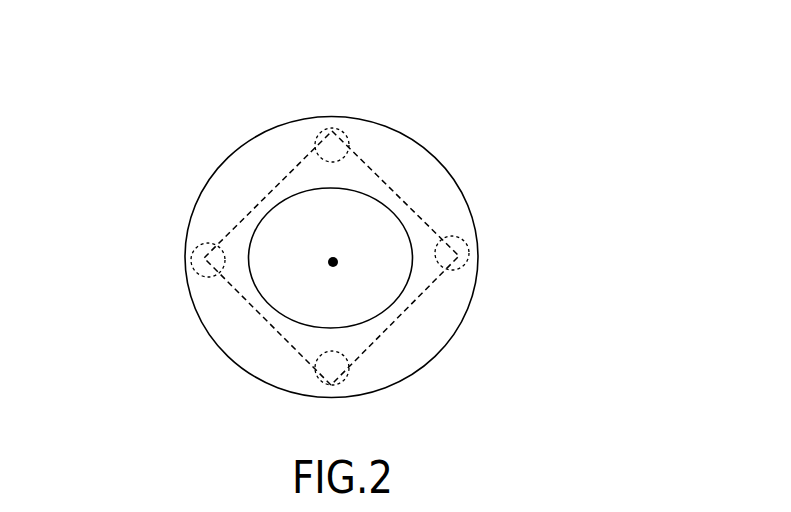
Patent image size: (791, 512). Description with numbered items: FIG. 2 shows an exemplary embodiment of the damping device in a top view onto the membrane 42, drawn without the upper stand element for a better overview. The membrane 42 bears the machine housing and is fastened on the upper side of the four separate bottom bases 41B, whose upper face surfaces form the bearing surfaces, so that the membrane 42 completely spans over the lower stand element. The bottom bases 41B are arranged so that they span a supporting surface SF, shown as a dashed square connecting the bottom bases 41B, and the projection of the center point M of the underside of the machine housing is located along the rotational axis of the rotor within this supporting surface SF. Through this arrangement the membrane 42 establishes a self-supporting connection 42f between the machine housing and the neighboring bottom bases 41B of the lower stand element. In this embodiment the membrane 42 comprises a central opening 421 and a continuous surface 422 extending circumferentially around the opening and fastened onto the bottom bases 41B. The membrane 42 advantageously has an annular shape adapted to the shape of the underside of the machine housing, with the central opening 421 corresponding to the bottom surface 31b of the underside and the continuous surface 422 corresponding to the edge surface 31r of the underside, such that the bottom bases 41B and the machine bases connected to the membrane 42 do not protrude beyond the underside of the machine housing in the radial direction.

The membrane 42 is at (407, 221).
The self-supporting connection 42f is at (399, 221).
The continuous surface extending circumferentially around the opening 422 is at (399, 257).
The edge surface of the underside 31r is at (447, 200).
The central opening in the membrane 421 is at (256, 228).
The bottom surface of the underside 31b is at (294, 226).
The bottom base 41B is at (360, 143).
The supporting surface SF is at (428, 302).
The center point of underside M is at (336, 275).